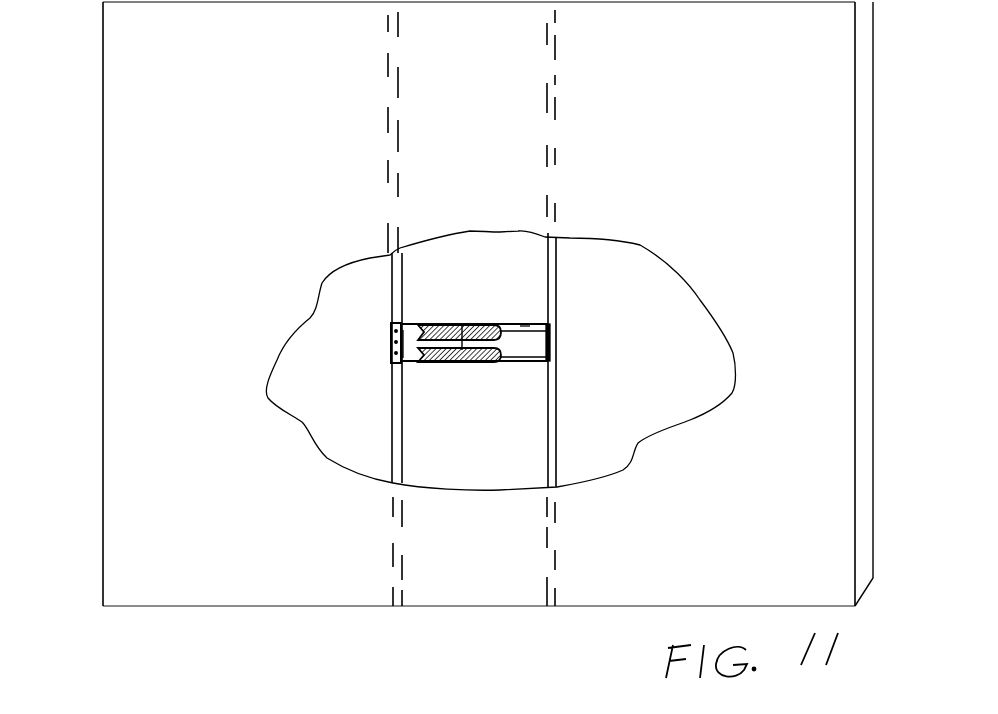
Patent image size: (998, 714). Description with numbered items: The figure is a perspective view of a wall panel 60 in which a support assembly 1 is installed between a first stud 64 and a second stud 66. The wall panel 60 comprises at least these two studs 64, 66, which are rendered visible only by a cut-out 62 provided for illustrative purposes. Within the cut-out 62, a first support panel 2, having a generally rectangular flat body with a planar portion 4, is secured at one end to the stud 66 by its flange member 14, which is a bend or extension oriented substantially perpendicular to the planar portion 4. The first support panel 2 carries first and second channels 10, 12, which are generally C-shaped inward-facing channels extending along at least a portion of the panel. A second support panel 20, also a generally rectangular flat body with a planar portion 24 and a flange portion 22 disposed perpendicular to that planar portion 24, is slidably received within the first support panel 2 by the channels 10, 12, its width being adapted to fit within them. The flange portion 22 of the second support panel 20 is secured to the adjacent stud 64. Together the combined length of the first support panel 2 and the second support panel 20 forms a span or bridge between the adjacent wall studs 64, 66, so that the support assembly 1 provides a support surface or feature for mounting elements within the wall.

The support assembly 1 is at (492, 367).
The first support panel 2 is at (486, 360).
The planar portion 4 is at (409, 347).
The first channel 10 is at (445, 362).
The second channel 12 is at (457, 325).
The flange member 14 is at (391, 352).
The second support panel 20 is at (523, 325).
The flange portion 22 is at (548, 340).
The planar portion 24 is at (522, 347).
The wall panel 60 is at (885, 136).
The cut-out 62 is at (737, 376).
The first stud 64 is at (556, 287).
The second stud 66 is at (390, 278).